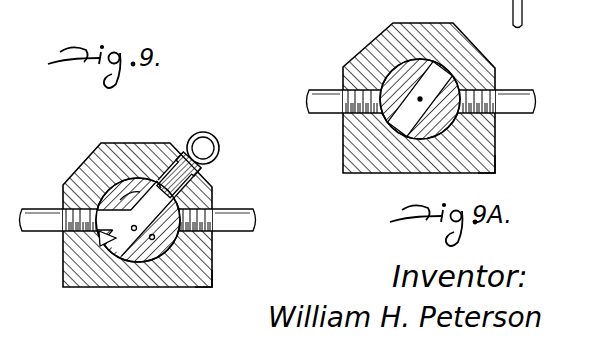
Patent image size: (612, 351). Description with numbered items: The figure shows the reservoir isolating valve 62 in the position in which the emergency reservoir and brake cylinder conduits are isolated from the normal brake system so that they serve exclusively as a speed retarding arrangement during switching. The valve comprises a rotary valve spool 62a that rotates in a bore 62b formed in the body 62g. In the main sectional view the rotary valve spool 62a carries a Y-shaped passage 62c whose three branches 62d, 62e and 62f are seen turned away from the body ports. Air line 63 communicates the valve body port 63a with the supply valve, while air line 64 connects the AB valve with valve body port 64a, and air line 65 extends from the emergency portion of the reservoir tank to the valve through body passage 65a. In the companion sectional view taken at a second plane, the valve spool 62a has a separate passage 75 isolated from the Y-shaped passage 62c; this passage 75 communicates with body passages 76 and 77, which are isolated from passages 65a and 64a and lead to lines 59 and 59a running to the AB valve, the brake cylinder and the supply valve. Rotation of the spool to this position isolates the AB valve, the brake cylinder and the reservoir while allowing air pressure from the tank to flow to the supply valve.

In FIG. 9, the reservoir isolating valve 62 is at (141, 141).
In FIG. 9A, the reservoir isolating valve 62 is at (389, 177).
In FIG. 9, the rotary valve spool 62a is at (122, 266).
In FIG. 9A, the rotary valve spool 62a is at (416, 142).
In FIG. 9, the bore 62b is at (148, 258).
In FIG. 9, the Y-shaped passage 62c is at (154, 238).
In FIG. 9, the branch 62d is at (108, 252).
In FIG. 9, the branch 62e is at (118, 200).
In FIG. 9, the branch 62f is at (158, 182).
In FIG. 9, the body 62g is at (203, 292).
In FIG. 9A, the body 62g is at (496, 164).
In FIG. 9, the air line 63 is at (210, 134).
In FIG. 9, the valve body port 63a is at (199, 188).
In FIG. 9, the air line 64 is at (246, 211).
In FIG. 9, the valve body port 64a is at (185, 239).
In FIG. 9, the air line 65 is at (38, 210).
In FIG. 9, the passage 65a is at (63, 252).
In FIG. 9A, the passage 75 is at (418, 92).
In FIG. 9A, the body passage 76 is at (345, 104).
In FIG. 9A, the body passage 77 is at (485, 105).
In FIG. 9A, the line 59 is at (523, 92).
In FIG. 9A, the line 59a is at (312, 90).